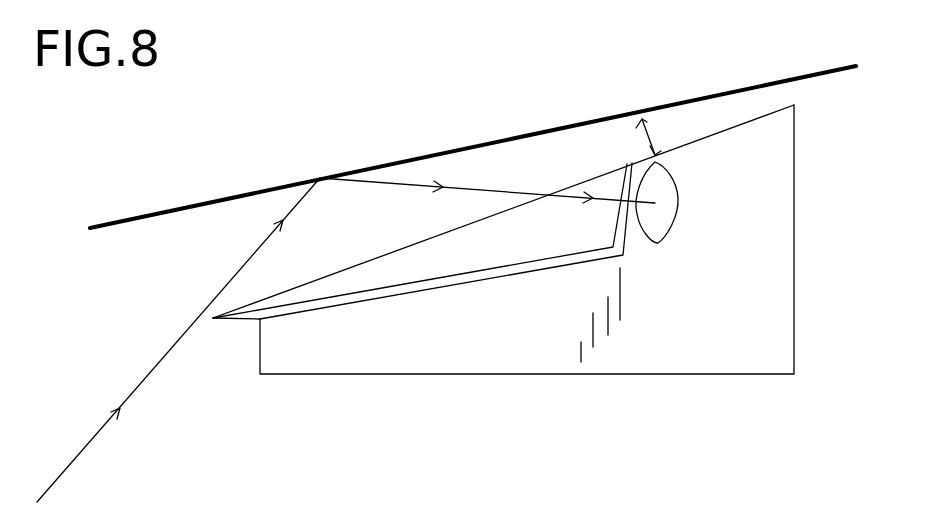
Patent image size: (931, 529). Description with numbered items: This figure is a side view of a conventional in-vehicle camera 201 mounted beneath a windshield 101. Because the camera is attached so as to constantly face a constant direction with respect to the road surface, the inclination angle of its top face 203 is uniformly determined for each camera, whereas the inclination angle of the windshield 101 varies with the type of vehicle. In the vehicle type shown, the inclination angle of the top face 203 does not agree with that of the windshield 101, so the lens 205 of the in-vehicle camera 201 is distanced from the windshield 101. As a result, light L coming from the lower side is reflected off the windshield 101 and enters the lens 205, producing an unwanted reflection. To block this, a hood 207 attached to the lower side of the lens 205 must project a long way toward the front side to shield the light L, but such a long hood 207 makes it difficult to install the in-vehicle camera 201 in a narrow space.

The windshield 101 is at (555, 126).
The in-vehicle camera 201 is at (794, 242).
The top face 203 is at (718, 133).
The lens 205 is at (663, 222).
The hood 207 is at (332, 287).
The light L is at (142, 383).